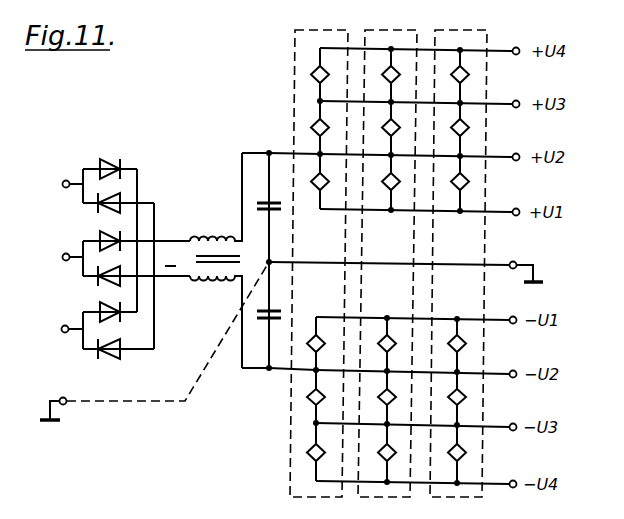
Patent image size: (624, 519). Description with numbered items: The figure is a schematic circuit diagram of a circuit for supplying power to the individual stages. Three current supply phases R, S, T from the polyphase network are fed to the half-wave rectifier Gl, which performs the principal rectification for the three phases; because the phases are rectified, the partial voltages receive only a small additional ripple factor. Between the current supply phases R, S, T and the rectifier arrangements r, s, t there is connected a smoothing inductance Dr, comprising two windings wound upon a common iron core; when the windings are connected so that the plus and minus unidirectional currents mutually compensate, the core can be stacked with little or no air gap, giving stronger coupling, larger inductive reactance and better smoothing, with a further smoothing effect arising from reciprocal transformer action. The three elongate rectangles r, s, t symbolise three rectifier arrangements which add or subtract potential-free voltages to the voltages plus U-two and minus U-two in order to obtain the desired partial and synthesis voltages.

The half-wave rectifier Gl is at (136, 244).
The smoothing inductance Dr is at (202, 260).
The current supply phase R is at (63, 184).
The current supply phase S is at (63, 257).
The current supply phase T is at (63, 329).
The rectifier arrangement r is at (319, 263).
The rectifier arrangement s is at (387, 263).
The rectifier arrangement t is at (458, 263).